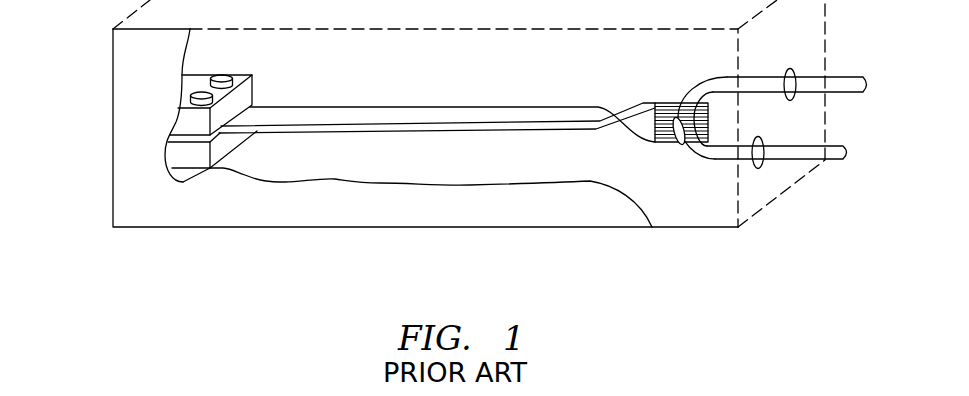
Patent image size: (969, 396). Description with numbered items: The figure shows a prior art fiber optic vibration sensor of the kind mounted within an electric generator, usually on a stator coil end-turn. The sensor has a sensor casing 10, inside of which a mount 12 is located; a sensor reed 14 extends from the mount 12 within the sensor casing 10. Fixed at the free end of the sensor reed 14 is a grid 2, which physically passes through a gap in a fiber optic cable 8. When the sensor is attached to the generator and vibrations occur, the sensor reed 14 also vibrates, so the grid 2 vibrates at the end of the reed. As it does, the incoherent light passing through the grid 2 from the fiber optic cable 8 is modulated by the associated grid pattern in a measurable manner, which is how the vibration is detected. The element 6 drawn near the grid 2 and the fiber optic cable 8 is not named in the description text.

The grid 2 is at (668, 103).
The tube end / conductor 6 is at (680, 146).
The fiber optic cable 8 is at (838, 77).
The sensor casing 10 is at (273, 210).
The mount 12 is at (197, 82).
The sensor reed 14 is at (448, 133).